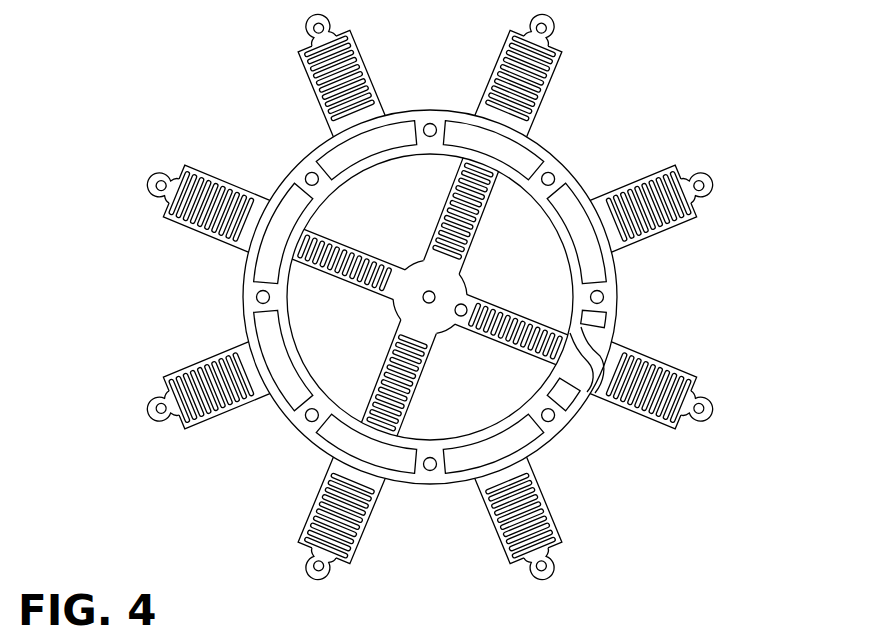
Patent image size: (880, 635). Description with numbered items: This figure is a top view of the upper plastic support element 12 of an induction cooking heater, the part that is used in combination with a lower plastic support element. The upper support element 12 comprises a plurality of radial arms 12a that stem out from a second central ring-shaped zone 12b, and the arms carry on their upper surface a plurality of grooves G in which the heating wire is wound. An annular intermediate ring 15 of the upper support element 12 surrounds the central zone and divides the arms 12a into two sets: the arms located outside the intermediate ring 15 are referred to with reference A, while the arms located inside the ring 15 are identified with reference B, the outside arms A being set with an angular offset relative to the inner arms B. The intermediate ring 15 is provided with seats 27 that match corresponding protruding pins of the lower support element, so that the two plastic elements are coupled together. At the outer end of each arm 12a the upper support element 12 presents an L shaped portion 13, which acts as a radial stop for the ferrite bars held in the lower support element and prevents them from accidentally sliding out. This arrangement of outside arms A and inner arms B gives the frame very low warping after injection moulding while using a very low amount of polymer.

The upper plastic support element 12 is at (683, 90).
The radial arm 12a is at (497, 222).
The second central ring-shaped zone 12b is at (420, 278).
The annular intermediate ring 15 is at (430, 101).
The seat 27 is at (604, 297).
The L shaped portion 13 is at (688, 426).
The outside arms A is at (187, 229).
The inner arms B is at (507, 344).
The grooves G is at (553, 522).